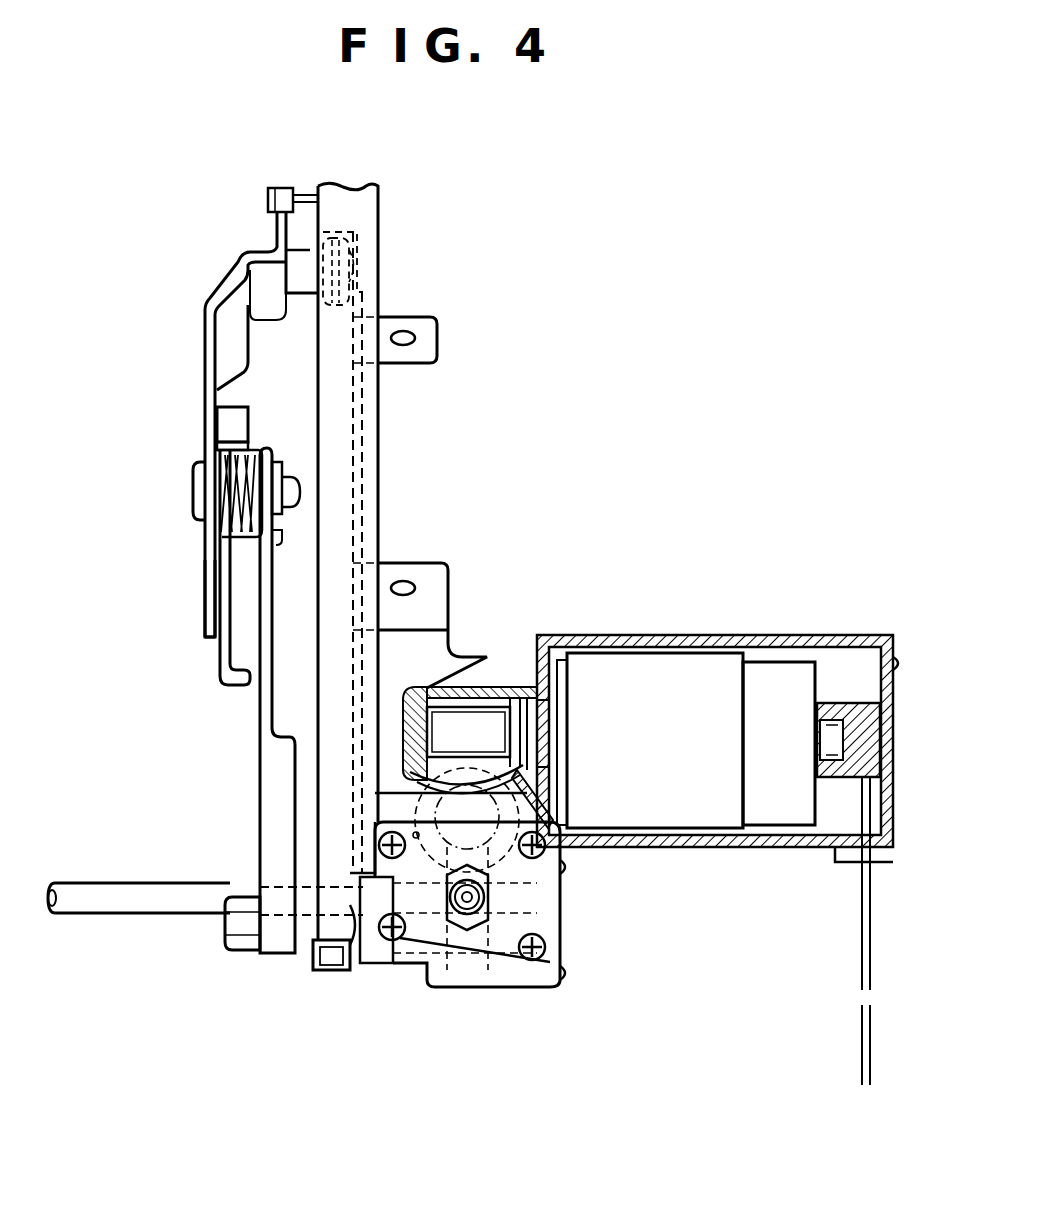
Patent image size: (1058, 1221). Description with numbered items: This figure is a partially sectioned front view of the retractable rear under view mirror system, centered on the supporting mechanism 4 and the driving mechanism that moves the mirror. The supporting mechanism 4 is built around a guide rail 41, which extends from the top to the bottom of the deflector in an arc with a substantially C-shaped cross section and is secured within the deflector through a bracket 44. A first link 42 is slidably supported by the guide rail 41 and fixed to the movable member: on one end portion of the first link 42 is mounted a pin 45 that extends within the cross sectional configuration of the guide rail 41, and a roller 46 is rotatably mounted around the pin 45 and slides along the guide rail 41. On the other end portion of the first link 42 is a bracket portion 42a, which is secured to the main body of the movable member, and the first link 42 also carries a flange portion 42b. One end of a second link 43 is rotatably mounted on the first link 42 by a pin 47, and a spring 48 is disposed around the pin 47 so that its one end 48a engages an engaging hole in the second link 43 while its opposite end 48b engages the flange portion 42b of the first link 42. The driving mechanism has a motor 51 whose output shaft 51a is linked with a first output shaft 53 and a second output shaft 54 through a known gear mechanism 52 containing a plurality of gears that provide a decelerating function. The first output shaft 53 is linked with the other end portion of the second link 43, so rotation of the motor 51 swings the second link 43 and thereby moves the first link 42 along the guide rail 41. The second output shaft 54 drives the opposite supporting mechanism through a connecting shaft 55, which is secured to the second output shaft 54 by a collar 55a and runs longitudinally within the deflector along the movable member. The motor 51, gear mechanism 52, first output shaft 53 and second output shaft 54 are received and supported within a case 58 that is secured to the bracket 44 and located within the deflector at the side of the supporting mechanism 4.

The supporting mechanism 4 is at (150, 447).
The guide rail 41 is at (334, 478).
The first link 42 is at (233, 343).
The bracket portion 42a is at (210, 613).
The flange portion 42b is at (222, 415).
The second link 43 is at (272, 772).
The bracket 44 is at (412, 325).
The pin 45 is at (300, 283).
The roller 46 is at (340, 250).
The pin 47 is at (200, 487).
The spring 48 is at (212, 450).
The one end of spring 48a is at (277, 552).
The opposite end of spring 48b is at (223, 657).
The motor 51 is at (650, 677).
The output shaft of motor 51a is at (423, 733).
The gear mechanism 52 is at (530, 753).
The first output shaft 53 is at (412, 950).
The second output shaft 54 is at (523, 897).
The connecting shaft 55 is at (97, 903).
The collar 55a is at (307, 950).
The case 58 is at (788, 635).